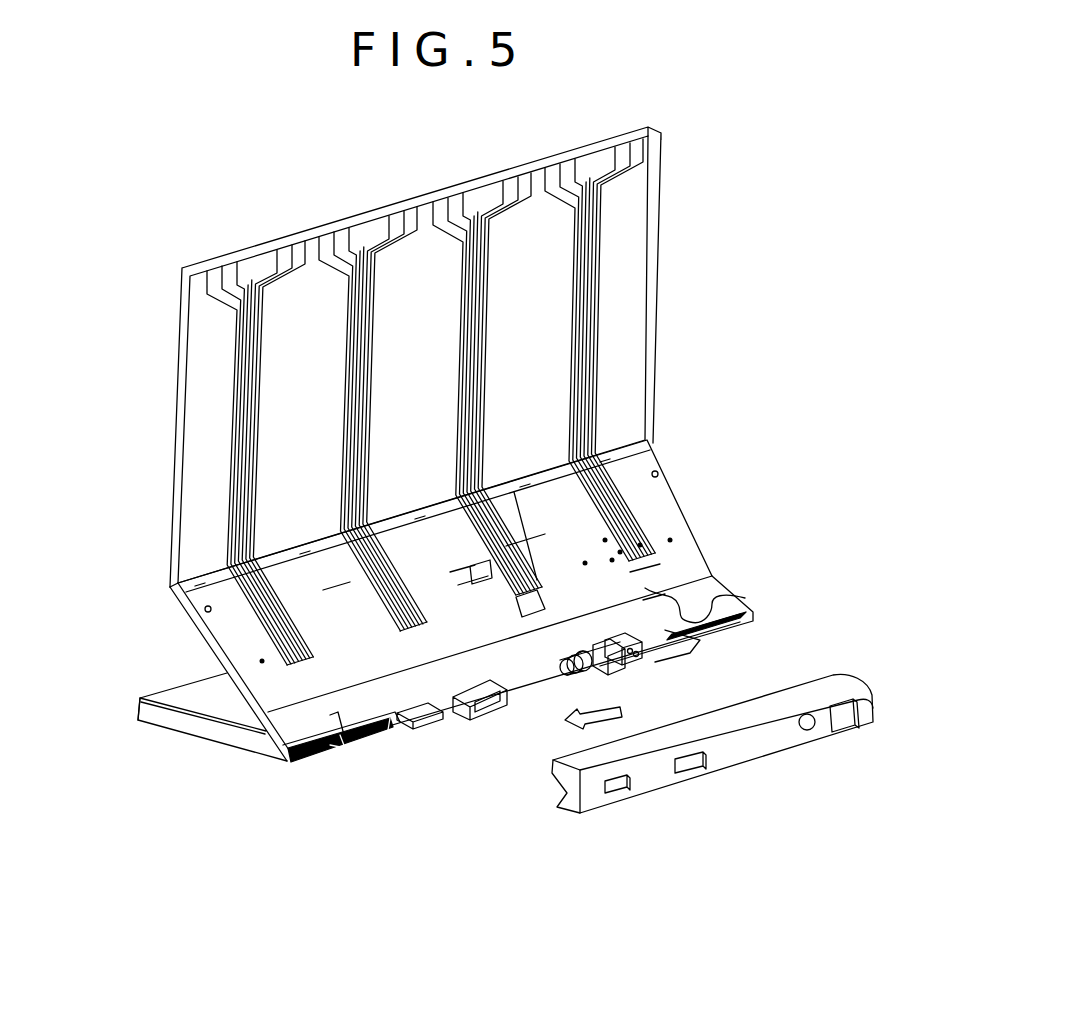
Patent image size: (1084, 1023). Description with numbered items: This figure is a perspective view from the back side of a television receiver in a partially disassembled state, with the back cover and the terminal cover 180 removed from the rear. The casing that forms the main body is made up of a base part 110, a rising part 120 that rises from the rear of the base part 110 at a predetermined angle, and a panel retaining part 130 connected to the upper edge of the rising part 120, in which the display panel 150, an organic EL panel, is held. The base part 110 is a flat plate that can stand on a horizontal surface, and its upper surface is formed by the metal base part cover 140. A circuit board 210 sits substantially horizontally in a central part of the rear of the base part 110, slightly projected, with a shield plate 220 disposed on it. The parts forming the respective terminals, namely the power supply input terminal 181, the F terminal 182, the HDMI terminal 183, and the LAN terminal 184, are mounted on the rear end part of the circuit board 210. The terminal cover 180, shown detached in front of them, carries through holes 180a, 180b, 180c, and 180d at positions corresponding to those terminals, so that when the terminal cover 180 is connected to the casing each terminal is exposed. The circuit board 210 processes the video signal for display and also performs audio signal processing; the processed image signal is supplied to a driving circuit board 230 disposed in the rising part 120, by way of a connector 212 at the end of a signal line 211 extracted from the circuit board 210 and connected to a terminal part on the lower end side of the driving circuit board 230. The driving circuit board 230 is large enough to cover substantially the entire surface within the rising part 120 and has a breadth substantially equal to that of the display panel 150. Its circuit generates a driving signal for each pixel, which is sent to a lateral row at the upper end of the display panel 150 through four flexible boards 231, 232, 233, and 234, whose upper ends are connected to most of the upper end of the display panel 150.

The base part 110 is at (260, 759).
The rising part 120 is at (200, 633).
The panel retaining part 130 is at (178, 410).
The base part cover 140 is at (187, 722).
The display panel 150 is at (621, 245).
The terminal cover 180 is at (737, 780).
The through hole 180a is at (849, 728).
The through hole 180b is at (807, 730).
The through hole 180c is at (690, 775).
The through hole 180d is at (620, 795).
The power supply input terminal 181 is at (642, 652).
The F terminal 182 is at (605, 668).
The HDMI terminal 183 is at (487, 717).
The LAN terminal 184 is at (433, 723).
The circuit board 210 is at (668, 660).
The signal line 211 is at (740, 602).
The connector 212 is at (690, 588).
The shield plate 220 is at (403, 730).
The driving circuit board 230 is at (660, 490).
The flexible board 231 is at (607, 364).
The flexible board 232 is at (494, 316).
The flexible board 233 is at (350, 337).
The flexible board 234 is at (233, 465).